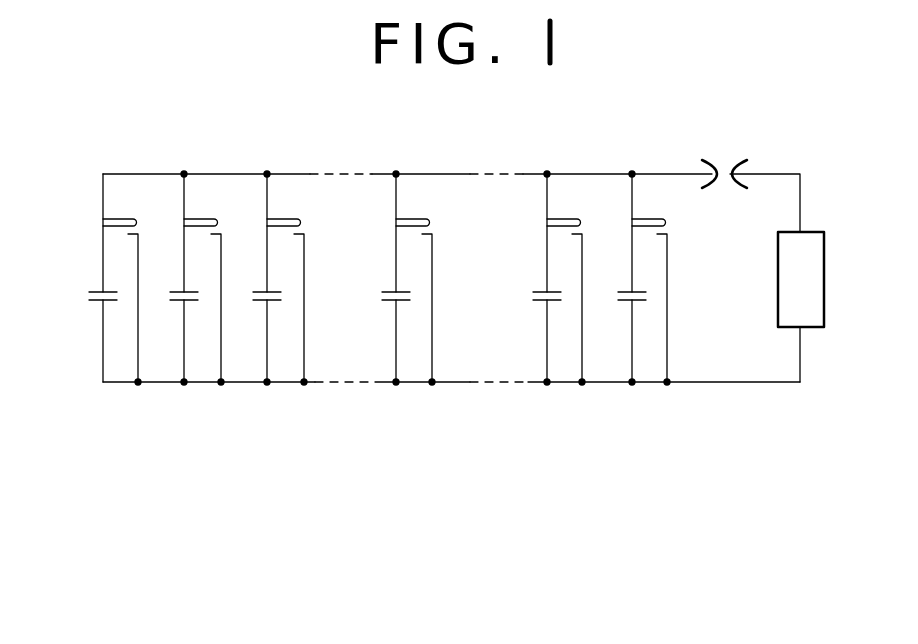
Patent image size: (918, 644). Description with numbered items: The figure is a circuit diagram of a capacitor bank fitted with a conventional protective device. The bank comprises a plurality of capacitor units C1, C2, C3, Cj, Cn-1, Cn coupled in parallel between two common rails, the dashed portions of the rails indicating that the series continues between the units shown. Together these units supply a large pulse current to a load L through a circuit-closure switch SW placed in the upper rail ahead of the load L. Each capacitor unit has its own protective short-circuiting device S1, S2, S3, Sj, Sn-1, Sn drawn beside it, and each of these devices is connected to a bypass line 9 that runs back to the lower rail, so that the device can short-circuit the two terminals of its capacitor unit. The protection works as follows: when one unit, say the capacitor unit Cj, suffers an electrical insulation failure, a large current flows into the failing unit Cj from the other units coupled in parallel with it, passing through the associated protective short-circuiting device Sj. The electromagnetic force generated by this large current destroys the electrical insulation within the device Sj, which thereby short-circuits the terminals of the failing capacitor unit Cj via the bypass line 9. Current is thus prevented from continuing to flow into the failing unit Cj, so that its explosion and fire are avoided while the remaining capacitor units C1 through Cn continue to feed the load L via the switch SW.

The bypass line 9 is at (138, 335).
The capacitor unit C1 is at (84, 278).
The capacitor unit C2 is at (171, 278).
The capacitor unit C3 is at (254, 278).
The capacitor unit Cj is at (378, 278).
The capacitor unit Cn-1 is at (512, 278).
The capacitor unit Cn is at (617, 278).
The protective short-circuiting device S1 is at (138, 221).
The protective short-circuiting device S2 is at (221, 221).
The protective short-circuiting device S3 is at (303, 221).
The protective short-circuiting device Sj is at (429, 221).
The protective short-circuiting device Sn-1 is at (592, 221).
The protective short-circuiting device Sn is at (668, 221).
The circuit-closure switch SW is at (751, 184).
The load L is at (813, 307).